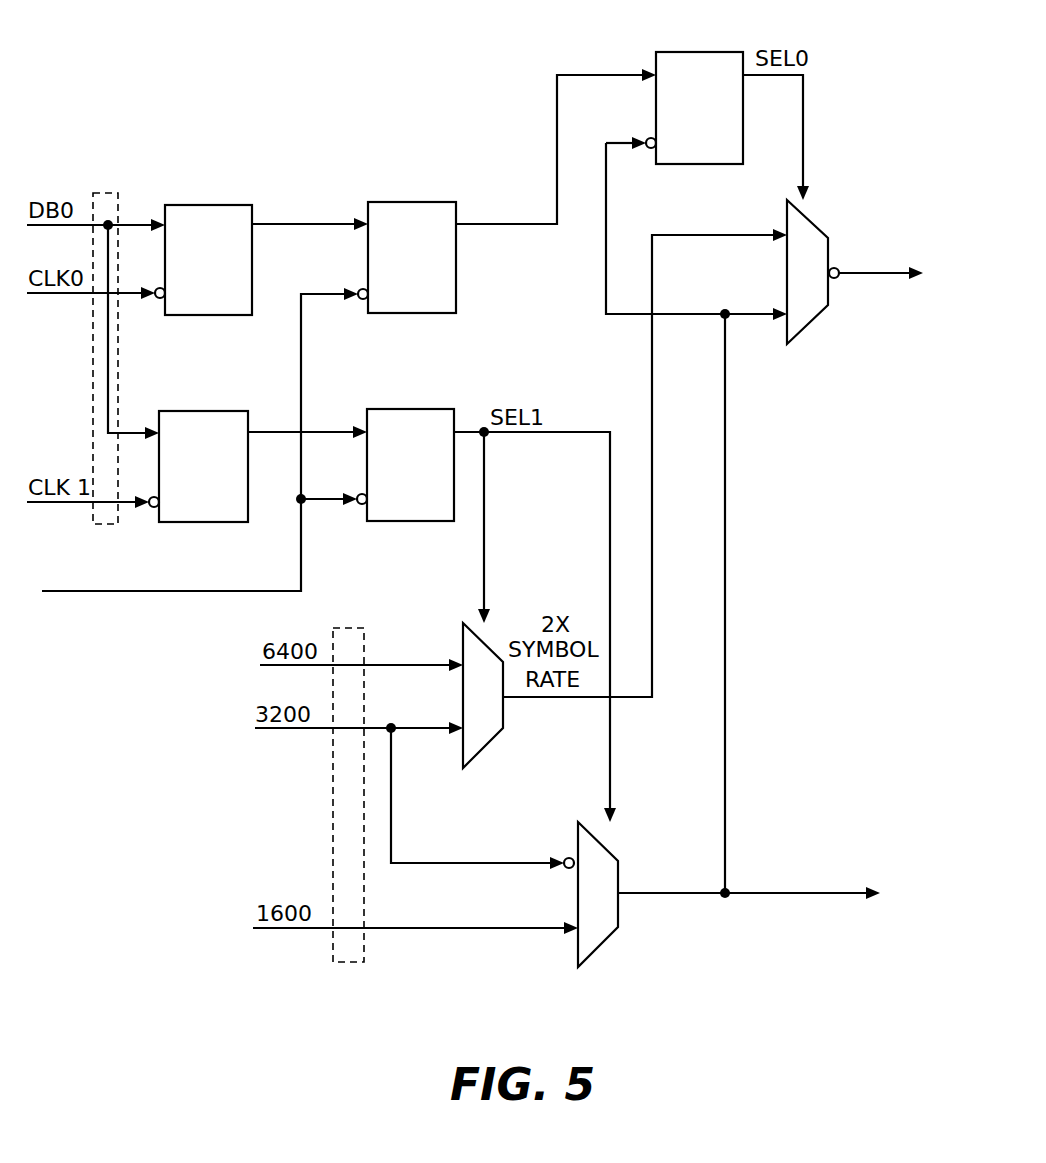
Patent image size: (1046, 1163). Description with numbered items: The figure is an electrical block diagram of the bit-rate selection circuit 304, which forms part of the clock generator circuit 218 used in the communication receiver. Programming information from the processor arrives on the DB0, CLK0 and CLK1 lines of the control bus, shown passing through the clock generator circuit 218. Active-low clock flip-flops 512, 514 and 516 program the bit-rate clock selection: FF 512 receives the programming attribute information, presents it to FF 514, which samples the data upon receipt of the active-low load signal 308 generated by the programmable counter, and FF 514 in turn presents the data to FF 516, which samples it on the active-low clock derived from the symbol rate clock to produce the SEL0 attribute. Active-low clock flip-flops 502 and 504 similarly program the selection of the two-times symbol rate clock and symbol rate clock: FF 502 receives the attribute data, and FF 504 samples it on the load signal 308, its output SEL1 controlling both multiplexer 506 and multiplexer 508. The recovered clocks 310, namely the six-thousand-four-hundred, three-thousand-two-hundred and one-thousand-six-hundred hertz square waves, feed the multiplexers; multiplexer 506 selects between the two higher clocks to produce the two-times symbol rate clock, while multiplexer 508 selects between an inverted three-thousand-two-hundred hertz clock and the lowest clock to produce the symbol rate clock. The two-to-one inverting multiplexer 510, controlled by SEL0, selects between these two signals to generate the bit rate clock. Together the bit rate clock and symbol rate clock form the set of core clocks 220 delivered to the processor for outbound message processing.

The clock generator circuit 218 is at (105, 192).
The flip-flop 512 is at (187, 205).
The flip-flop 514 is at (388, 202).
The flip-flop 516 is at (672, 52).
The flip-flop 502 is at (178, 411).
The flip-flop 504 is at (388, 409).
The multiplexer 506 is at (490, 745).
The multiplexer 508 is at (605, 945).
The two-to-one inverting multiplexer 510 is at (810, 323).
The core clocks 220 is at (896, 275).
The load signal 308 is at (175, 592).
The clocks 310 is at (358, 965).
The bit-rate selection circuit 304 is at (536, 1054).